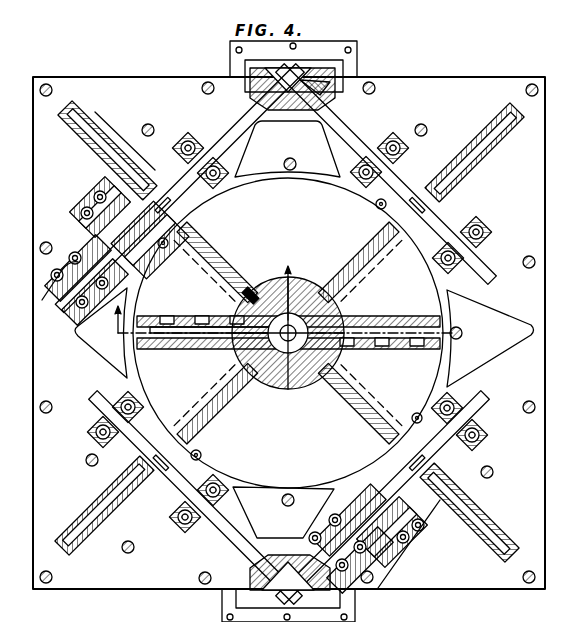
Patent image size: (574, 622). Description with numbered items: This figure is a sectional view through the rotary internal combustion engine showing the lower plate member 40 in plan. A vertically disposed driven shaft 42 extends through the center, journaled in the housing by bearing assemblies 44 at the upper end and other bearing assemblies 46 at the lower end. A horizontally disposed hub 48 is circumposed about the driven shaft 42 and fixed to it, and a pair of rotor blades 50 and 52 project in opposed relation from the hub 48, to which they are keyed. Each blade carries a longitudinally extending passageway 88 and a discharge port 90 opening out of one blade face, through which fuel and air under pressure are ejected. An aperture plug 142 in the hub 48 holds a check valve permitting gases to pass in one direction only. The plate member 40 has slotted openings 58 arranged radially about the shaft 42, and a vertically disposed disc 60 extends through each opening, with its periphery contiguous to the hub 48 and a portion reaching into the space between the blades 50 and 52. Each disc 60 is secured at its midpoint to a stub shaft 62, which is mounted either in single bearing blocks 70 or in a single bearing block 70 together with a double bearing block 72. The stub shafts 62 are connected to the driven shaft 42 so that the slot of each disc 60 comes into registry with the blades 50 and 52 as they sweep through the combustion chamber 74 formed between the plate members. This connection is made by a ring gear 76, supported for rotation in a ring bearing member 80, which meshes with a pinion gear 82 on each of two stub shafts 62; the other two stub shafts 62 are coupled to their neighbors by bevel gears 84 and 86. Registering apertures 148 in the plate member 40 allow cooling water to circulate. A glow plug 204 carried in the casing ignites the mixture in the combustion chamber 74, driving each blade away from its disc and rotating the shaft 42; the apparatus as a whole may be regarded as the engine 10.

The axis direction arrow 10 is at (205, 293).
The lower plate member 40 is at (472, 116).
The driven shaft 42 is at (286, 388).
The bearing assemblies 44 is at (374, 538).
The bearing assemblies 46 is at (288, 588).
The hub 48 is at (345, 302).
The rotor blade 50 is at (182, 338).
The rotor blade 52 is at (400, 320).
The slotted openings 58 is at (97, 123).
The disc 60 is at (142, 176).
The stub shaft 62 is at (230, 140).
The single bearing block 70 is at (194, 140).
The double bearing block 72 is at (85, 245).
The combustion chamber 74 is at (445, 362).
The ring gear 76 is at (122, 292).
The ring bearing member 80 is at (95, 185).
The pinion gear 82 is at (80, 290).
The bevel gear 84 is at (255, 76).
The bevel gear 86 is at (322, 82).
The passageway 88 is at (218, 338).
The discharge port 90 is at (215, 316).
The aperture plug 142 is at (268, 282).
The registering apertures 148 is at (322, 160).
The glow plug 204 is at (376, 206).